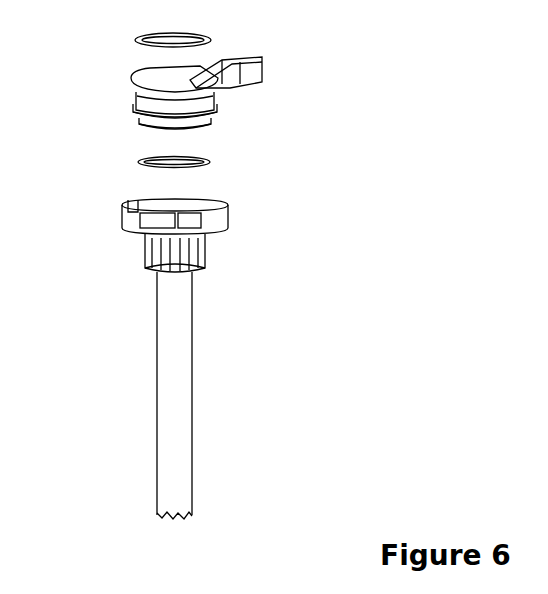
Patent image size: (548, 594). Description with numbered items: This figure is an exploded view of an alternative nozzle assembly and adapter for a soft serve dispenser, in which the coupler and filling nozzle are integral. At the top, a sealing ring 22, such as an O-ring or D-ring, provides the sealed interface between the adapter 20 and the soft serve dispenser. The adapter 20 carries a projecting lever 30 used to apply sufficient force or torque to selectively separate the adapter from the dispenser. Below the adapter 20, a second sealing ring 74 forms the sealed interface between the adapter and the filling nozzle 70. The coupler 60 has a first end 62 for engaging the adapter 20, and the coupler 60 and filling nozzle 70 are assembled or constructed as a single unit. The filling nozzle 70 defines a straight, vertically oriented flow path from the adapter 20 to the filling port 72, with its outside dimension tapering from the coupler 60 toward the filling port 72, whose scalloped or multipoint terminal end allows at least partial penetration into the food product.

The adapter 20 is at (134, 84).
The sealing ring 22 is at (210, 40).
The projecting lever 30 is at (248, 62).
The coupler 60 is at (132, 234).
The first end 62 is at (133, 206).
The filling nozzle 70 is at (182, 371).
The filling port 72 is at (180, 518).
The sealing ring 74 is at (205, 162).